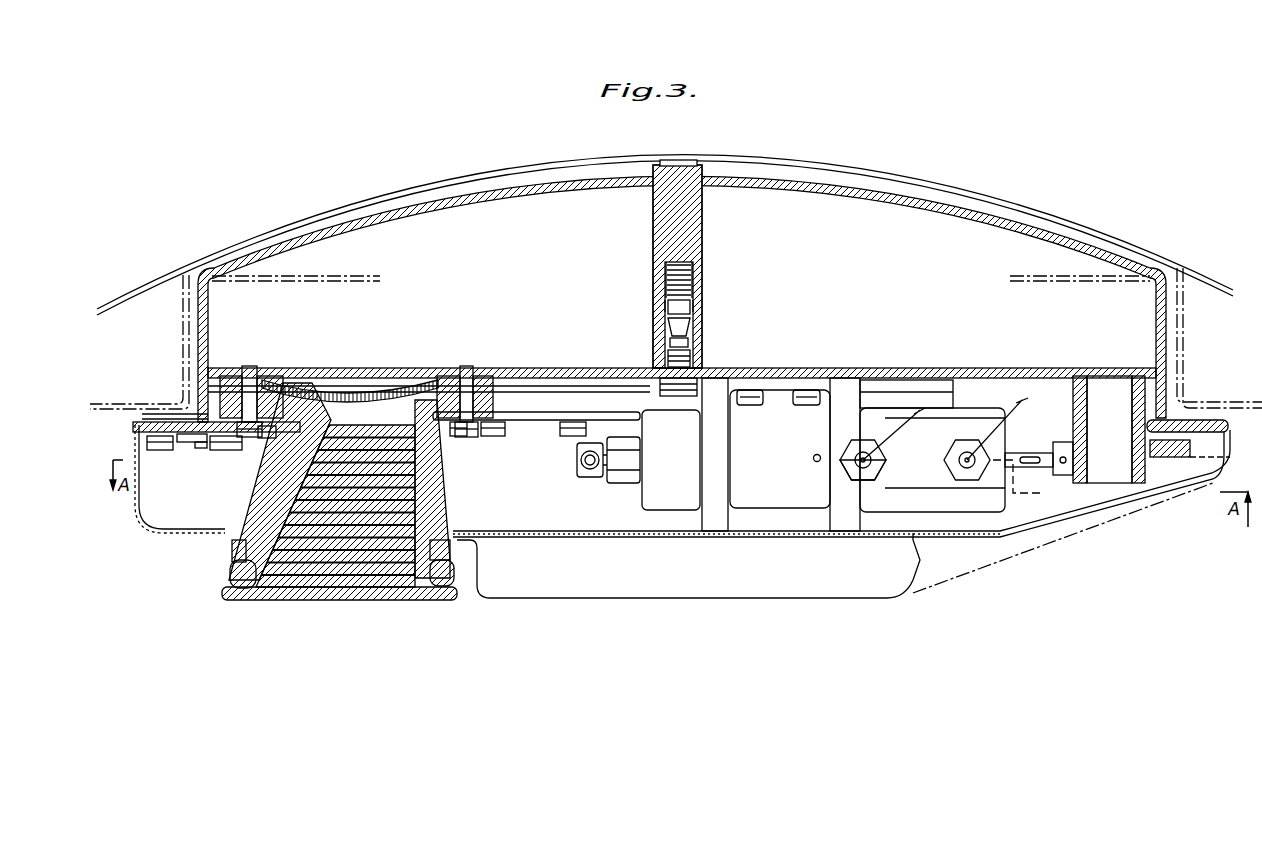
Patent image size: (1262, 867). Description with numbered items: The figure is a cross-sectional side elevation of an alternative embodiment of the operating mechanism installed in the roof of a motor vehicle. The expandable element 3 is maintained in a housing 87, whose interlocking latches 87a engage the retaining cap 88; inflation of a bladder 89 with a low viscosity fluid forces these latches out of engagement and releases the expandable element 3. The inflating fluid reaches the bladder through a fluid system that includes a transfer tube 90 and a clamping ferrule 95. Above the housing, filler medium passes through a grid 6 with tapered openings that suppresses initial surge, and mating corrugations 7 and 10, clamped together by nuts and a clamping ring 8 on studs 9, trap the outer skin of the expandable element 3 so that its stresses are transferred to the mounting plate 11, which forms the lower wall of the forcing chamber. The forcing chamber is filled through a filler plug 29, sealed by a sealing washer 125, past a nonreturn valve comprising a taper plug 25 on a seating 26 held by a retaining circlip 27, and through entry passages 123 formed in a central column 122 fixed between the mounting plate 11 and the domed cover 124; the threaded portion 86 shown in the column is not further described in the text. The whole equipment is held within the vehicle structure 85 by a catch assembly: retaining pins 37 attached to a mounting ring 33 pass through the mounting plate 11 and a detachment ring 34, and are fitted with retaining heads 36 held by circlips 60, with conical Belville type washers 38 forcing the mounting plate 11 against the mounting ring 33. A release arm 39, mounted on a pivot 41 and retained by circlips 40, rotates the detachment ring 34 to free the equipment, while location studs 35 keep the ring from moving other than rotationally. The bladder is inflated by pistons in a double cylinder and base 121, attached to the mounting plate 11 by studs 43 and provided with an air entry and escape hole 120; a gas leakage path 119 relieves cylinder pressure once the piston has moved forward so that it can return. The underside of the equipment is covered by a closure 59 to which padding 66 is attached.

The domed cover 124 is at (455, 192).
The central column 122 is at (653, 200).
The threaded bore 86 is at (696, 284).
The entry passages 123 is at (657, 306).
The taper plug 25 is at (692, 312).
The seating 26 is at (668, 328).
The retaining circlip 27 is at (670, 342).
The filler plug 29 is at (668, 356).
The sealing washer 125 is at (660, 385).
The mounting plate 11 is at (584, 368).
The corrugations 10 is at (488, 372).
The double cylinder and base 121 is at (800, 378).
The studs 9 is at (250, 377).
The corrugations 7 is at (236, 377).
The grid 6 is at (340, 392).
The vehicle structure 85 is at (182, 378).
The mounting ring 33 is at (1216, 420).
The detachment ring 34 is at (1197, 420).
The conical Belville type washers 38 is at (140, 430).
The circlips 60 is at (160, 450).
The retaining pins 37 is at (190, 443).
The retaining heads 36 is at (201, 448).
The location studs 35 is at (226, 450).
The clamping ring 8 is at (268, 438).
The housing 87 is at (258, 505).
The interlocking latches 87a is at (233, 545).
The bladder 89 is at (235, 572).
The retaining cap 88 is at (262, 598).
The expandable element 3 is at (350, 572).
The closure 59 is at (150, 522).
The transfer tube 90 is at (577, 466).
The clamping ferrule 95 is at (592, 479).
The studs 43 is at (760, 400).
The air entry and escape hole 120 is at (814, 456).
The gas leakage path 119 is at (1035, 453).
The pivot 41 is at (1075, 483).
The circlips 40 is at (1076, 402).
The release arm 39 is at (1189, 457).
The padding 66 is at (990, 568).